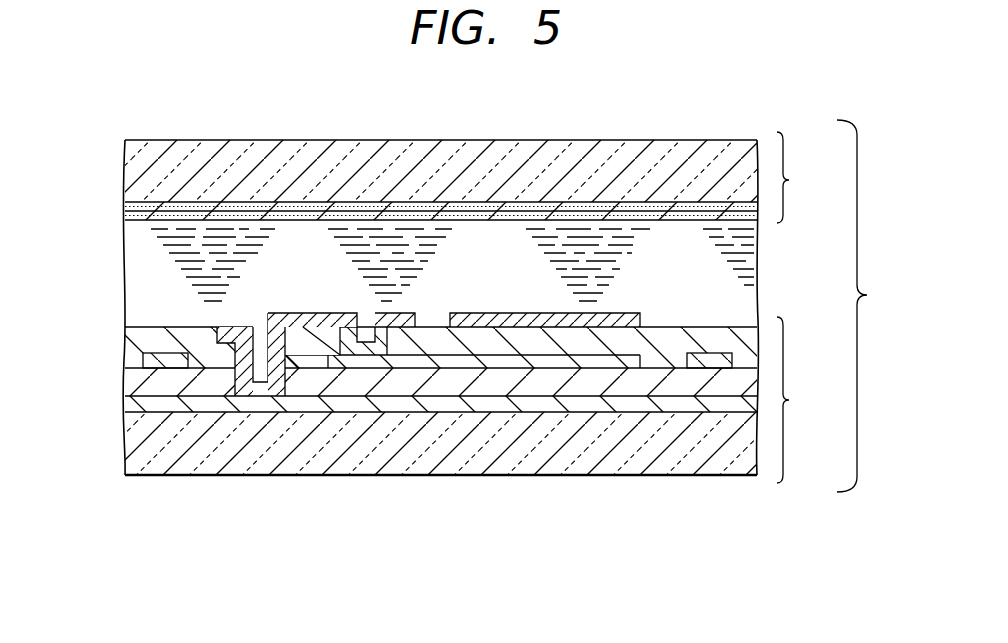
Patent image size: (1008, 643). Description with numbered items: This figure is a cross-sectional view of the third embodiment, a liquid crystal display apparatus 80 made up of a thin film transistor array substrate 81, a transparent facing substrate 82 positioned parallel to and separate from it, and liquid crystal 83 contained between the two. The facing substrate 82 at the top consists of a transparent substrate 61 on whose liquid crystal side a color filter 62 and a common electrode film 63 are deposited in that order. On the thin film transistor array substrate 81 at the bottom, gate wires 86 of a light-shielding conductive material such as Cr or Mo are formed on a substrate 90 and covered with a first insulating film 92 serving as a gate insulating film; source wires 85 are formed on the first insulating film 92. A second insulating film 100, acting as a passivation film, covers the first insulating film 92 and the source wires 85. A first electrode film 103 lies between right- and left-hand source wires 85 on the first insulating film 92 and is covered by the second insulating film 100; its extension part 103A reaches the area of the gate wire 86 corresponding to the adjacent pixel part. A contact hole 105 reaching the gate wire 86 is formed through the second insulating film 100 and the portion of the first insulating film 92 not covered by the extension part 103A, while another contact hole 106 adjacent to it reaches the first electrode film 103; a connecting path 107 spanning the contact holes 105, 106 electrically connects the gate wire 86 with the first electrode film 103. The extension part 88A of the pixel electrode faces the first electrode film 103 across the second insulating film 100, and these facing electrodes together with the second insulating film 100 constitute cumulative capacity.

The transparent substrate 61 is at (413, 148).
The color filter 62 is at (498, 205).
The common electrode film 63 is at (611, 217).
The liquid crystal display apparatus 80 is at (513, 306).
The thin film transistor array substrate 81 is at (472, 400).
The facing substrate 82 is at (472, 177).
The liquid crystal 83 is at (757, 258).
The source wire 85 is at (147, 360).
The gate wire 86 is at (124, 408).
The extension part of pixel electrode 88A is at (485, 322).
The substrate 90 is at (537, 453).
The first insulating film 92 is at (128, 388).
The second insulating film 100 is at (130, 340).
The first electrode film 103 is at (598, 360).
The extension part of first electrode film 103A is at (420, 363).
The contact hole 105 is at (248, 397).
The contact hole 106 is at (343, 354).
The connecting path 107 is at (280, 383).